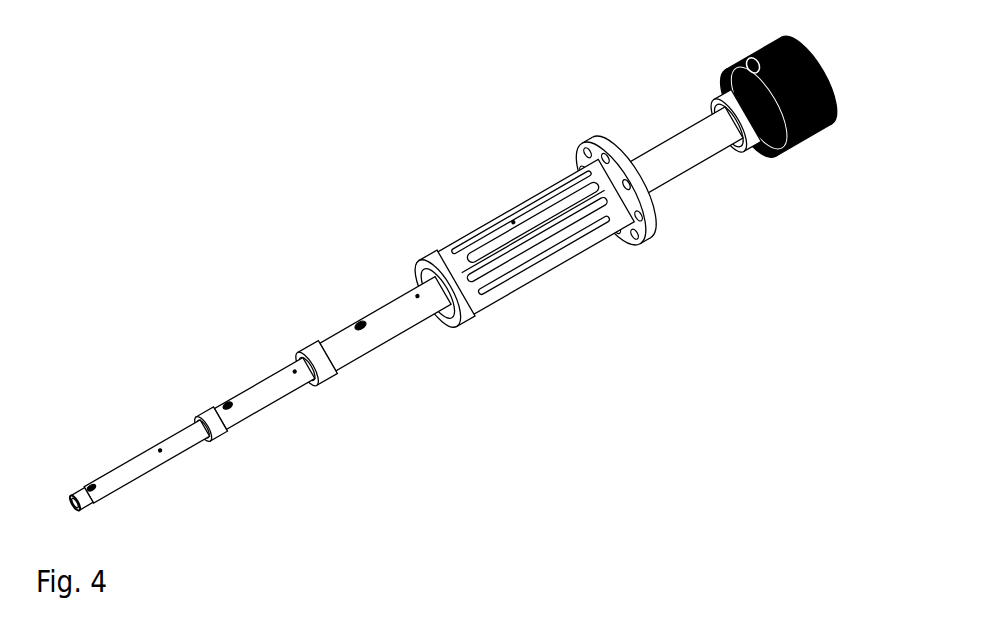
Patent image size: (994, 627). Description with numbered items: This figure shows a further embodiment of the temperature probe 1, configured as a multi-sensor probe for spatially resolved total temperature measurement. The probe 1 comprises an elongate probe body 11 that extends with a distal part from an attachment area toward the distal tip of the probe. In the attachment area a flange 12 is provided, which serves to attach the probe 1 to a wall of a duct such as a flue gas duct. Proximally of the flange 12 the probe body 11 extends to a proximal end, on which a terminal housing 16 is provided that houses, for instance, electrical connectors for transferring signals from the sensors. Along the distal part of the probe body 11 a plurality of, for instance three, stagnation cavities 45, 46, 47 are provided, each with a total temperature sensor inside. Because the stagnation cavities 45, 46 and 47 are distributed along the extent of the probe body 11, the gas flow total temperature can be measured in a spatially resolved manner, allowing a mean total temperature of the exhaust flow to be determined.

The probe 1 is at (456, 272).
The probe body 11 is at (424, 182).
The flange 12 is at (655, 243).
The terminal housing 16 is at (794, 162).
The stagnation cavity 45 is at (91, 482).
The stagnation cavity 46 is at (229, 398).
The stagnation cavity 47 is at (361, 314).